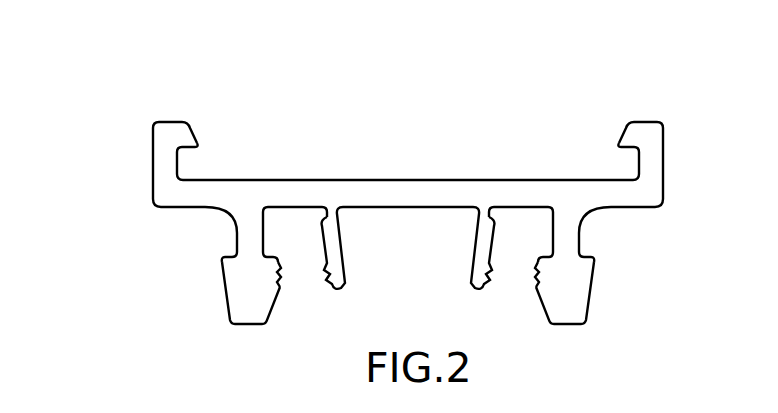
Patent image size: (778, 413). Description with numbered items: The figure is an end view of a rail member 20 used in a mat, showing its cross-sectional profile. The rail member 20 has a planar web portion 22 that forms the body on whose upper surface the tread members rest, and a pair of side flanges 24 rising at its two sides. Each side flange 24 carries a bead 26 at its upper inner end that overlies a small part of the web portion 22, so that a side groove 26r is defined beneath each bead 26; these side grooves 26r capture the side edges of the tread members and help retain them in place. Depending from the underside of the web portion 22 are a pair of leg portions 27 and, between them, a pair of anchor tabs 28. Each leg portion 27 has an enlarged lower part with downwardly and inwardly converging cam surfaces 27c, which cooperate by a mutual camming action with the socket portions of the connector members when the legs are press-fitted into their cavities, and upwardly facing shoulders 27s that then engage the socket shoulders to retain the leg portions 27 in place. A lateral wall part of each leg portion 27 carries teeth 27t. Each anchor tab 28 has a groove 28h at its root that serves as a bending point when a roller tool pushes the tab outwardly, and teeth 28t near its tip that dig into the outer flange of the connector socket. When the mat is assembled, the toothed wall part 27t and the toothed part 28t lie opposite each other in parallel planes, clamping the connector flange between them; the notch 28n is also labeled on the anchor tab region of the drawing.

The rail member 20 is at (281, 130).
The planar web portion 22 is at (380, 178).
The side flanges 24 is at (153, 163).
The bead 26 is at (187, 122).
The side groove 26r is at (177, 158).
The dependent leg portions 27 is at (237, 245).
The upwardly facing shoulders 27s is at (545, 262).
The cam surfaces 27c is at (592, 300).
The teeth 27t is at (542, 283).
The dependent anchor tabs 28 is at (475, 237).
The groove 28h is at (320, 213).
The channel notch 28n is at (495, 214).
The teeth 28t is at (325, 287).